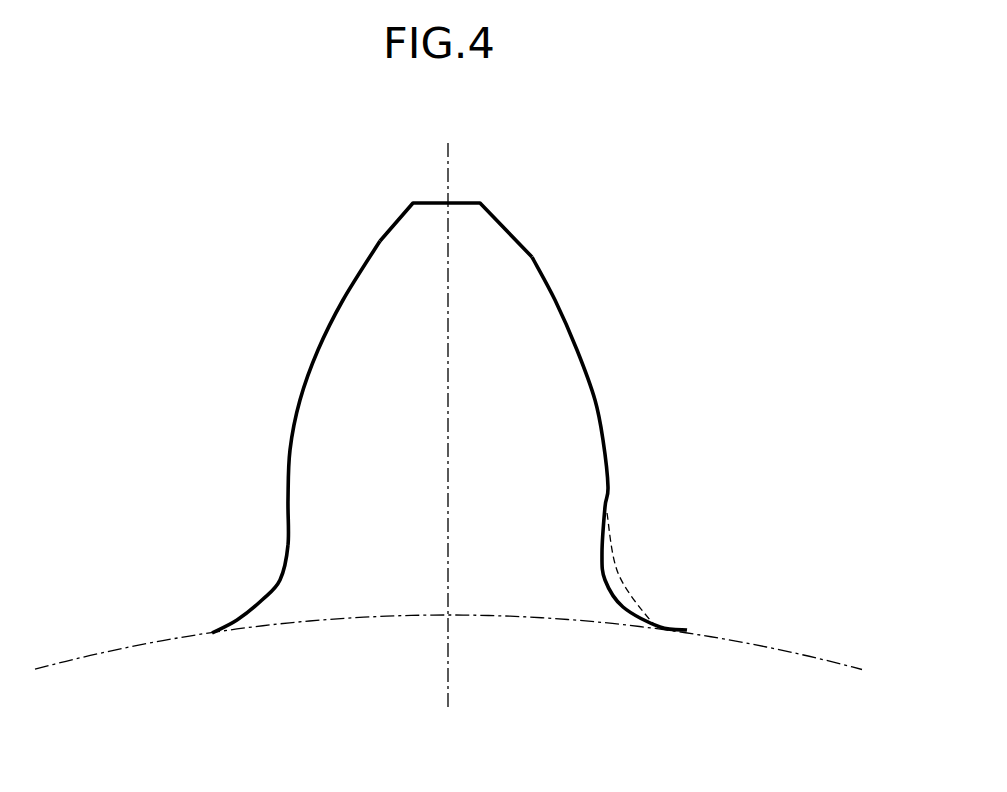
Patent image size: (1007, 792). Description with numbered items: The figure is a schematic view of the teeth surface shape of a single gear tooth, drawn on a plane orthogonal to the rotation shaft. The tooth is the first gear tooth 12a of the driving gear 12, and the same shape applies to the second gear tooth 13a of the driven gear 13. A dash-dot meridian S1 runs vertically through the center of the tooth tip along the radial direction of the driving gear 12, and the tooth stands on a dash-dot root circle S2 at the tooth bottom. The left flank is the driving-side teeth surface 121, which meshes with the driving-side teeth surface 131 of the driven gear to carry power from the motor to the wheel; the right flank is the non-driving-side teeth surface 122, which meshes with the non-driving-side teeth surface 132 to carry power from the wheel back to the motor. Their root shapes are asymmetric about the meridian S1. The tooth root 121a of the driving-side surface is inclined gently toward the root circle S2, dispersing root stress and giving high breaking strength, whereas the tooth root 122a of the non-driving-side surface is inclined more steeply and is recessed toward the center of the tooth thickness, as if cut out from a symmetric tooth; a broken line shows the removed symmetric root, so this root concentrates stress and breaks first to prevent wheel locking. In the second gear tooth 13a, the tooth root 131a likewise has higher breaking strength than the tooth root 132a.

The driving gear 12 is at (467, 366).
The driven gear 13 is at (377, 190).
The first gear tooth 12a is at (474, 195).
The second gear tooth 13a is at (473, 240).
The driving-side teeth surface 121 is at (257, 393).
The driving-side teeth surface 131 is at (333, 305).
The non-driving-side teeth surface 122 is at (646, 405).
The non-driving-side teeth surface 132 is at (580, 348).
The tooth root 121a is at (194, 571).
The tooth root 131a is at (262, 598).
The tooth root 122a is at (718, 571).
The tooth root 132a is at (609, 592).
The meridian line S1 is at (446, 175).
The root circle S2 is at (367, 618).